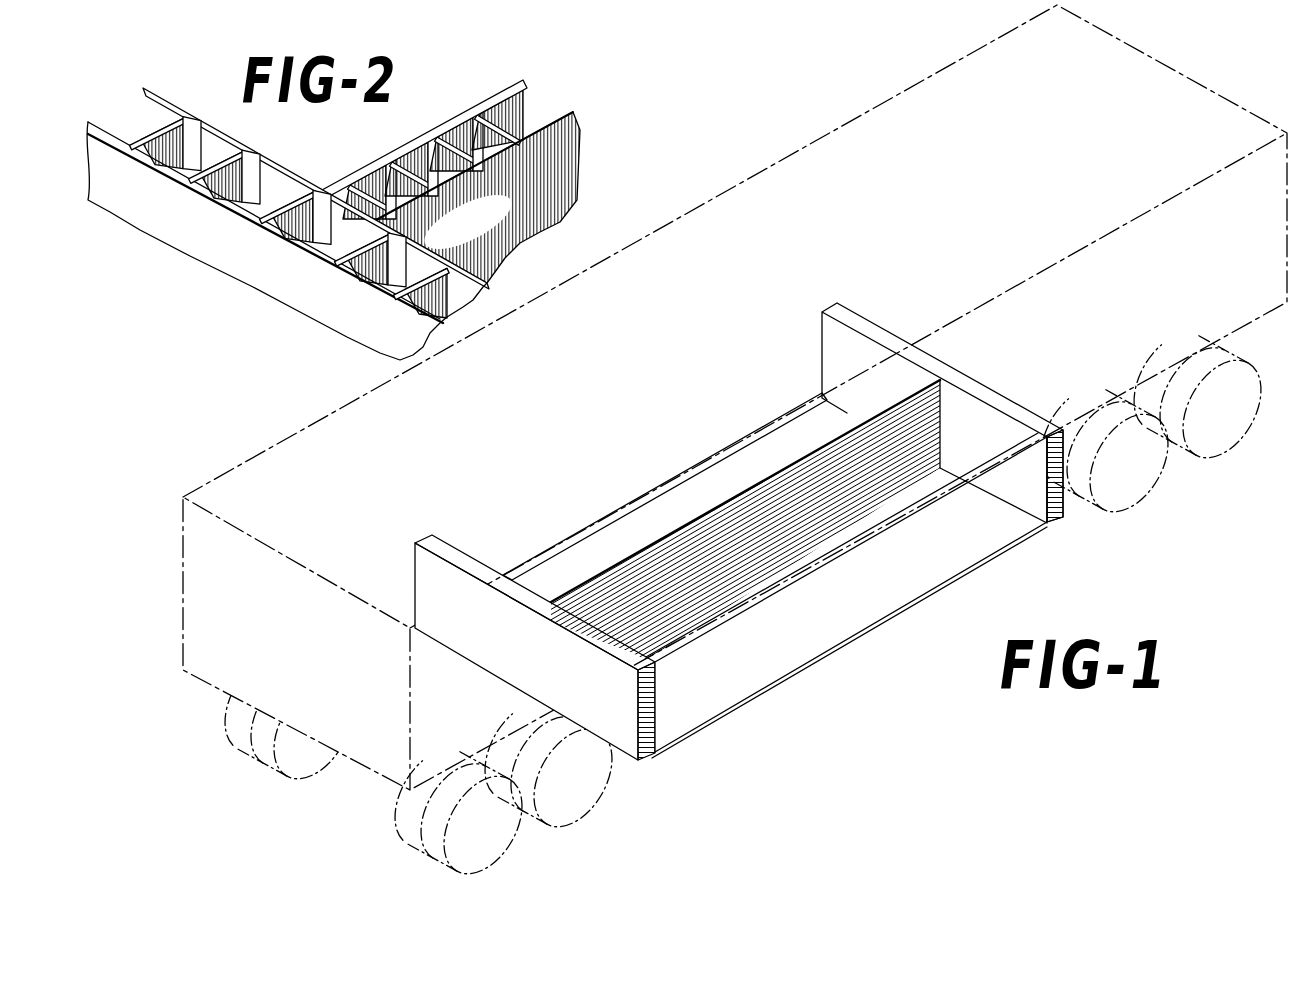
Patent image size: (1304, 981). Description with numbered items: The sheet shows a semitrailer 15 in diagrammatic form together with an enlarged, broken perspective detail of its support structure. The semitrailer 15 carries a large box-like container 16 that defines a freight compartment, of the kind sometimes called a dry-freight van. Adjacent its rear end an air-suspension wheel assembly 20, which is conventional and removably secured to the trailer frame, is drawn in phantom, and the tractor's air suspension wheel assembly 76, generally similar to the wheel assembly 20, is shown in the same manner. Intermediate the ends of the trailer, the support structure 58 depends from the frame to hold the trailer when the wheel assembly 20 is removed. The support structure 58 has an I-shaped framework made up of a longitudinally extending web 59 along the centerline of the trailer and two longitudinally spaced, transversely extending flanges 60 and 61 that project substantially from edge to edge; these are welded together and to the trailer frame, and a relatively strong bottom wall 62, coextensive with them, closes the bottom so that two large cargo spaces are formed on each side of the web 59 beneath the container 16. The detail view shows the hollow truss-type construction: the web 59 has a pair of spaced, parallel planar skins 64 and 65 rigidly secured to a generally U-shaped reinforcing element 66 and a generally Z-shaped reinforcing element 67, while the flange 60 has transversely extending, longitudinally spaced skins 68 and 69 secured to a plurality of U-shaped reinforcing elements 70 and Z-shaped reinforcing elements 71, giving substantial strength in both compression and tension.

In FIG. 1, the semitrailer 15 is at (735, 397).
In FIG. 1, the box-like container 16 is at (686, 235).
In FIG. 1, the air-suspension wheel assembly 20 is at (1212, 472).
In FIG. 1, the support structure 58 is at (739, 521).
In FIG. 1, the web 59 is at (728, 488).
In FIG. 2, the web 59 is at (518, 80).
In FIG. 1, the flange 60 is at (459, 553).
In FIG. 2, the flange 60 is at (287, 241).
In FIG. 1, the flange 61 is at (868, 323).
In FIG. 1, the bottom wall 62 is at (947, 568).
In FIG. 2, the skin 64 is at (567, 168).
In FIG. 2, the skin 65 is at (438, 131).
In FIG. 2, the reinforcing element 66 is at (393, 160).
In FIG. 2, the reinforcing element 67 is at (522, 118).
In FIG. 2, the skin 68 is at (160, 230).
In FIG. 2, the skin 69 is at (268, 172).
In FIG. 2, the reinforcing element 70 is at (182, 135).
In FIG. 2, the reinforcing element 71 is at (299, 182).
In FIG. 1, the air suspension wheel assembly 76 is at (586, 822).